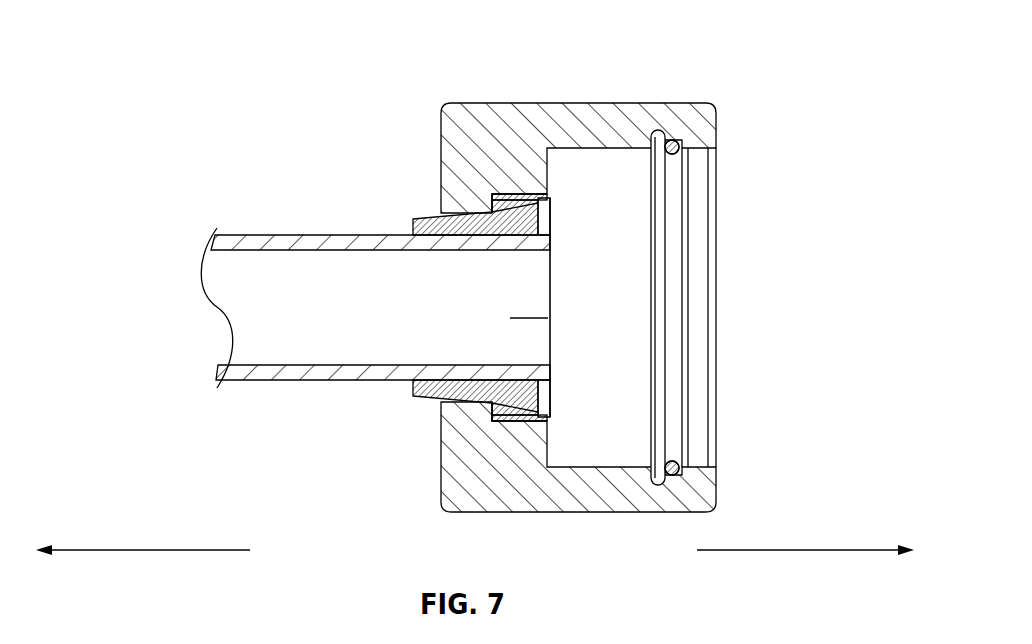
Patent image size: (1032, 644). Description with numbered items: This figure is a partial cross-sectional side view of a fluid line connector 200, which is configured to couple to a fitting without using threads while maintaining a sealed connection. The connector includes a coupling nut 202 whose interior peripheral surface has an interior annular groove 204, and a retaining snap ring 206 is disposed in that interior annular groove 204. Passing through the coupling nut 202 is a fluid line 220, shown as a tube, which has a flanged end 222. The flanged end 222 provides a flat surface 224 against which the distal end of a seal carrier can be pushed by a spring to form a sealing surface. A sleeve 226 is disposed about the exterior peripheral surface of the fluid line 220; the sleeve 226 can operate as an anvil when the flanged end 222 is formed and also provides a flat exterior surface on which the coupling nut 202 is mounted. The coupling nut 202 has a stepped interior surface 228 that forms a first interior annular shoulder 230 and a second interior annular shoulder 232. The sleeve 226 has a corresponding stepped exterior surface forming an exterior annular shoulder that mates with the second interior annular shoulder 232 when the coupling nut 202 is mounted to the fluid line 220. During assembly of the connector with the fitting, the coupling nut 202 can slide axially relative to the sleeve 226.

The fluid line connector 200 is at (210, 78).
The coupling nut 202 is at (682, 103).
The interior annular groove 204 is at (661, 152).
The retaining snap ring 206 is at (681, 143).
The fluid line 220 is at (314, 235).
The flanged end 222 is at (543, 414).
The flat surface 224 is at (552, 226).
The sleeve 226 is at (416, 222).
The stepped interior surface 228 is at (498, 192).
The first interior annular shoulder 230 is at (522, 197).
The second interior annular shoulder 232 is at (518, 192).